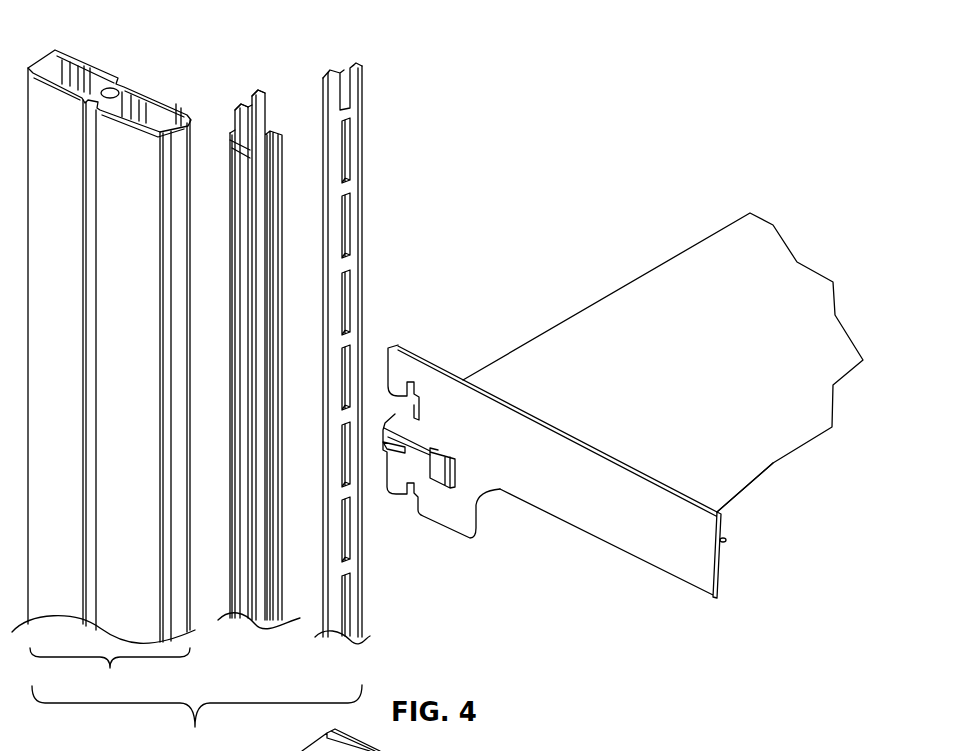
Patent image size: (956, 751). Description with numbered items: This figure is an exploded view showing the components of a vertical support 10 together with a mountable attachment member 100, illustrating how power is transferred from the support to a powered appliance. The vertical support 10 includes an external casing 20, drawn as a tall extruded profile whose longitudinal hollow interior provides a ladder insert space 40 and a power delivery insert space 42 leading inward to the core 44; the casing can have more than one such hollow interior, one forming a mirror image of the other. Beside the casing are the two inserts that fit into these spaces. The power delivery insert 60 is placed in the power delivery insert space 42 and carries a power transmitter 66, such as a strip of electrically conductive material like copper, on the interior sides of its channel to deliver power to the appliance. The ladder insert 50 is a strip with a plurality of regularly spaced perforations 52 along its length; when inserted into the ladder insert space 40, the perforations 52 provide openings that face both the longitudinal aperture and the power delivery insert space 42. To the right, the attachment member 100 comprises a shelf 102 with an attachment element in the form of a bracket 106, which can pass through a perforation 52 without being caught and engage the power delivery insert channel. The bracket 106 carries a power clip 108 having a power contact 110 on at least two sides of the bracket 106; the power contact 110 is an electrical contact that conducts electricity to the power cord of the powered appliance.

The vertical support 10 is at (197, 718).
The external casing 20 is at (103, 375).
The ladder insert space 40 is at (86, 55).
The power delivery insert space 42 is at (106, 66).
The core 44 is at (120, 86).
The ladder insert 50 is at (358, 642).
The perforations 52 is at (352, 202).
The power delivery insert 60 is at (258, 616).
The power transmitter 66 is at (254, 94).
The attachment member 100 is at (669, 259).
The shelf 102 is at (722, 477).
The bracket 106 is at (393, 403).
The power clip 108 is at (483, 500).
The power contact 110 is at (390, 440).